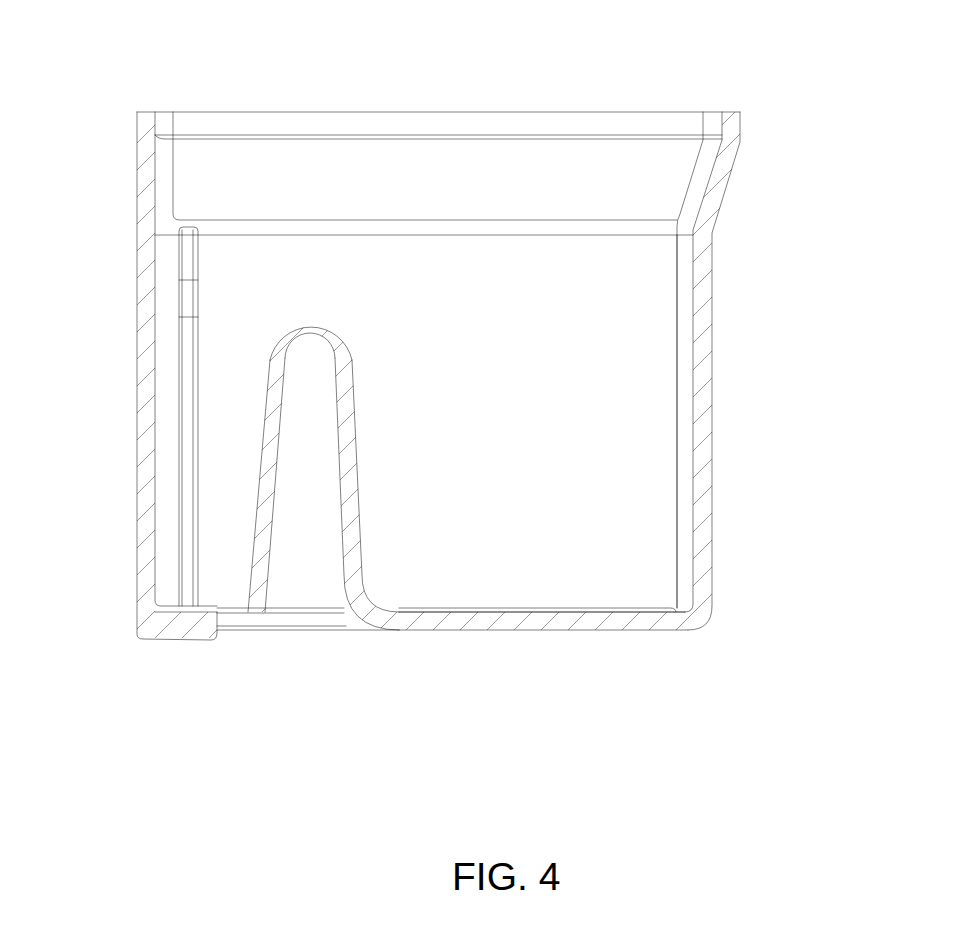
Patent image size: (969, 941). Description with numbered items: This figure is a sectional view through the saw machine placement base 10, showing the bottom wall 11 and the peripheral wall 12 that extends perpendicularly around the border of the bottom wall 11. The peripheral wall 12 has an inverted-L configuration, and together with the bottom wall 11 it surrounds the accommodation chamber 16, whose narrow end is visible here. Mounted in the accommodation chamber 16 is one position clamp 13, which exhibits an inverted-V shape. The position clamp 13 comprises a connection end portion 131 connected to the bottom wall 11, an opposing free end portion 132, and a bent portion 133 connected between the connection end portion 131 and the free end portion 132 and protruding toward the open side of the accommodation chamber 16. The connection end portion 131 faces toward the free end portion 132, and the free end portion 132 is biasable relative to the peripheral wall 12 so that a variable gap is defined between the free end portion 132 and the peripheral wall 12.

The saw machine placement base 10 is at (715, 272).
The bottom wall 11 is at (602, 620).
The peripheral wall 12 is at (702, 362).
The position clamp 13 is at (230, 389).
The connection end portion 131 is at (348, 558).
The free end portion 132 is at (257, 568).
The bent portion 133 is at (310, 327).
The accommodation chamber 16 is at (542, 313).